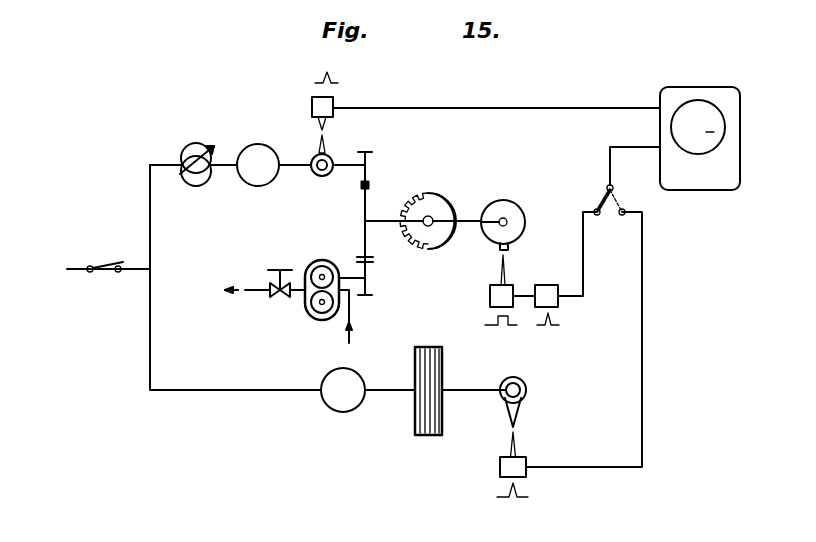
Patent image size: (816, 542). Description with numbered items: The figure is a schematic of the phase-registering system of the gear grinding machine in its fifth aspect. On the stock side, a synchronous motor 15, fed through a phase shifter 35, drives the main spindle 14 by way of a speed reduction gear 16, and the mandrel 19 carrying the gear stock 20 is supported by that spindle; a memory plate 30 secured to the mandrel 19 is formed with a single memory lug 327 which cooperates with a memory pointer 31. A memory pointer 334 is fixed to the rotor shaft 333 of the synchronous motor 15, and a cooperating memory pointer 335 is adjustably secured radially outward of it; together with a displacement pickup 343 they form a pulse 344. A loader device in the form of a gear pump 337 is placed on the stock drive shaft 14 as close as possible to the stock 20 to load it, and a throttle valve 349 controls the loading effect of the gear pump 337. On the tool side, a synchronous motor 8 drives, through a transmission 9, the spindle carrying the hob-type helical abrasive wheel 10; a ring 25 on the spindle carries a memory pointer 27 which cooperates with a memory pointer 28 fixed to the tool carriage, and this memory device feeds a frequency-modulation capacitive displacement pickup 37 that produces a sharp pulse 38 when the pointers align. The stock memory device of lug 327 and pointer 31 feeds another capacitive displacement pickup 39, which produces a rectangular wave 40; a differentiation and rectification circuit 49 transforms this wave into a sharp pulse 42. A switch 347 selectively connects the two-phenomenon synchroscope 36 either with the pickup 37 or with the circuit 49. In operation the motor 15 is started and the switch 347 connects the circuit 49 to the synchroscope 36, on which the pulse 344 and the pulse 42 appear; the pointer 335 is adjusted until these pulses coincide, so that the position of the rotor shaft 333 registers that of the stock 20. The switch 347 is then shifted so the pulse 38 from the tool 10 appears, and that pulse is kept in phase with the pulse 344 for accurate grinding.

The synchronous motor 8 is at (328, 407).
The transmission 9 is at (380, 393).
The hob-type helical abrasive wheel 10 is at (414, 420).
The main spindle 14 is at (385, 220).
The synchronous motor 15 is at (258, 144).
The speed reduction gear 16 is at (359, 204).
The mandrel 19 is at (468, 218).
The gear stock 20 is at (424, 195).
The ring 25 is at (527, 385).
The memory pointer 27 is at (518, 415).
The memory pointer 28 is at (518, 441).
The memory plate 30 is at (510, 201).
The memory pointer 31 is at (507, 272).
The phase shifter 35 is at (193, 144).
The two-phenomenon synchroscope 36 is at (691, 96).
The frequency-modulation capacitive displacement pickup 37 is at (500, 466).
The sharp sensible pulse 38 is at (497, 497).
The frequency-modulation capacitive displacement pickup 39 is at (490, 297).
The square or rectangular wave 40 is at (485, 325).
The sharp rising pulse 42 is at (556, 325).
The differentiation and rectification circuit 49 is at (548, 285).
The memory lug 327 is at (511, 244).
The rotor shaft 333 is at (297, 167).
The memory pointer 334 is at (321, 152).
The memory pointer 335 is at (331, 122).
The gear pump 337 is at (306, 306).
The displacement pickup 343 is at (334, 101).
The pulse 344 is at (331, 80).
The switch 347 is at (607, 216).
The throttle valve 349 is at (272, 268).